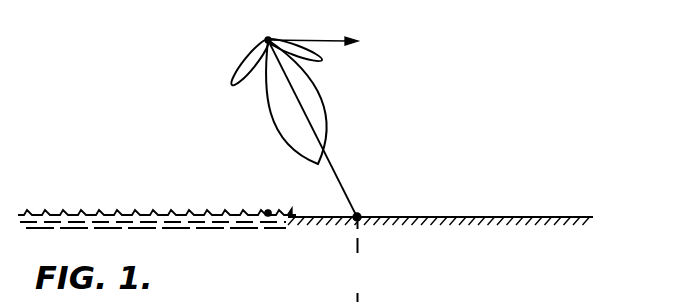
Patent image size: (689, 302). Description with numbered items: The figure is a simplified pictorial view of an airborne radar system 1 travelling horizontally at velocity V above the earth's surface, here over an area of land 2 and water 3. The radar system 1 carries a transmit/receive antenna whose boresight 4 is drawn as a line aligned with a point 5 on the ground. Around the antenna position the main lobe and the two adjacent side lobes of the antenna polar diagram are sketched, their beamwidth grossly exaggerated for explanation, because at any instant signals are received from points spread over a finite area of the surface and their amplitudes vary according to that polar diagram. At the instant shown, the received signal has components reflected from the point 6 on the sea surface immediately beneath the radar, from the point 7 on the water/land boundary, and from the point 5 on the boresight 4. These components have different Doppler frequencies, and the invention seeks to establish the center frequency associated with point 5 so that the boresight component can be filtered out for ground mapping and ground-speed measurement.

The airborne radar system 1 is at (273, 38).
The velocity V is at (321, 42).
The area of land 2 is at (463, 216).
The water 3 is at (128, 212).
The boresight 4 is at (340, 183).
The point on the ground 5 is at (364, 211).
The point on the sea surface 6 is at (267, 210).
The point on the water/land boundary 7 is at (292, 212).